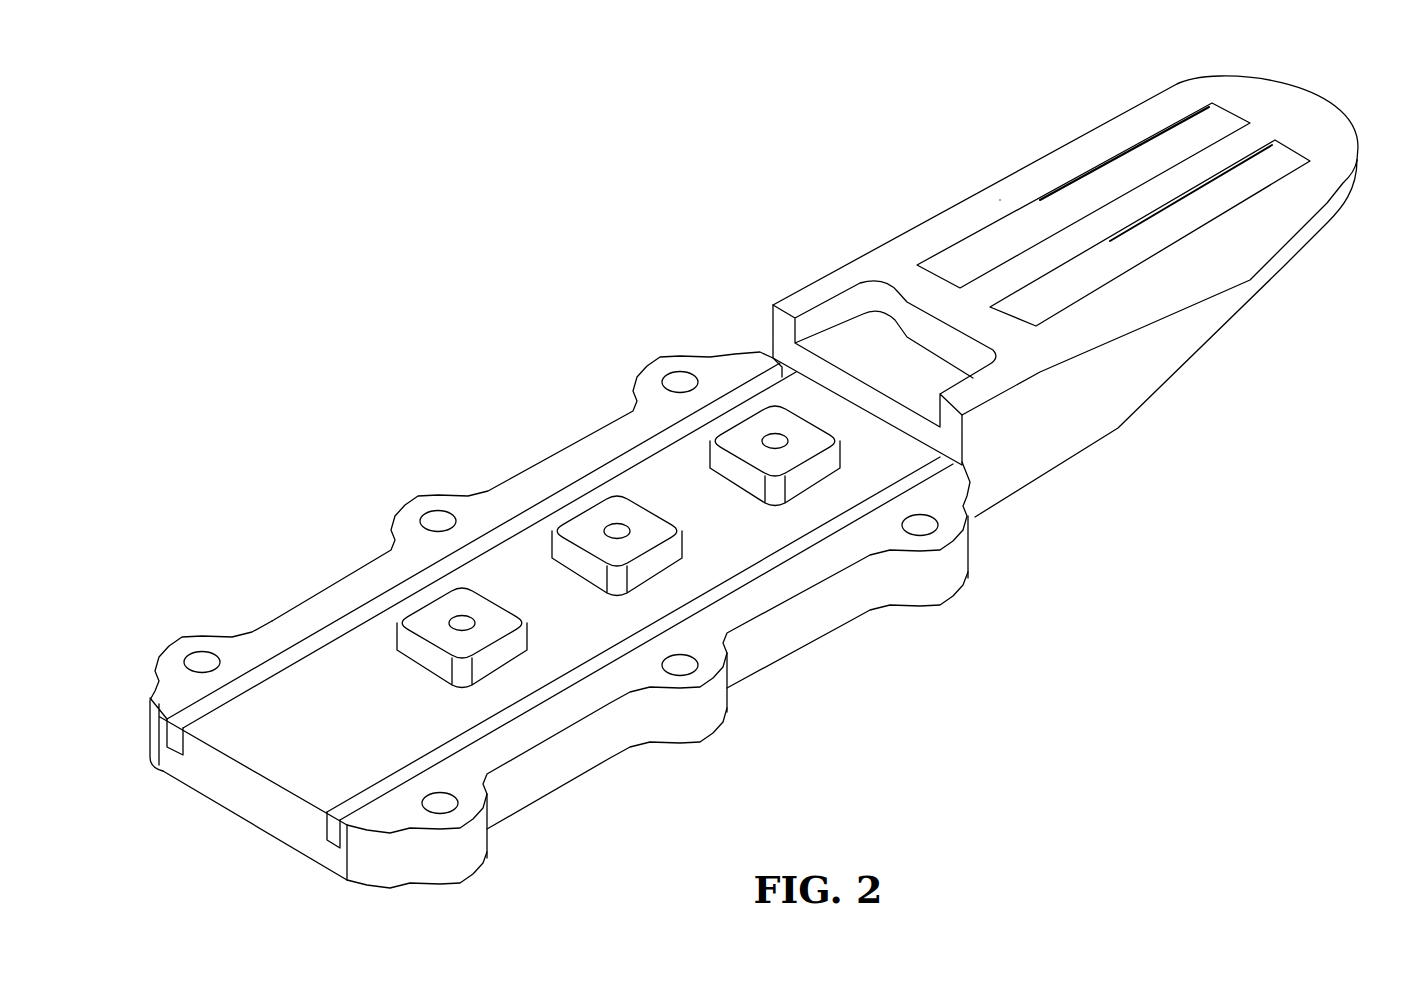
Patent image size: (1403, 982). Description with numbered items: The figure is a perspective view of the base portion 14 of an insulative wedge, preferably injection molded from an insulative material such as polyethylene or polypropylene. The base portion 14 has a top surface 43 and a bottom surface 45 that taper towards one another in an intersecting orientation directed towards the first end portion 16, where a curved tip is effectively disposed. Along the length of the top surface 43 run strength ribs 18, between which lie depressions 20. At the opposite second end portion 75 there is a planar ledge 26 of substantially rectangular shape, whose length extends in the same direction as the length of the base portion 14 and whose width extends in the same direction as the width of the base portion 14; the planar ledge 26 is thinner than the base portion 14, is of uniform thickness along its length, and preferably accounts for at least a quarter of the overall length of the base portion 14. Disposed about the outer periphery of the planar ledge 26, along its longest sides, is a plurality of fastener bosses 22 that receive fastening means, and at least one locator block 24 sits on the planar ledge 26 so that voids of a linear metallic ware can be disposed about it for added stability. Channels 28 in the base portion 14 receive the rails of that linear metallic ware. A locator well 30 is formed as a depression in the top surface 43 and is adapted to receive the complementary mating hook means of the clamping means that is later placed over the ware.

The base portion 14 is at (756, 486).
The first end portion 16 is at (1071, 292).
The strength ribs 18 is at (966, 215).
The depressions 20 is at (1048, 220).
The fastener bosses 22 is at (202, 653).
The locator block 24 is at (425, 620).
The planar ledge 26 is at (277, 748).
The channels 28 is at (177, 750).
The locator well 30 is at (888, 338).
The top surface 43 is at (972, 385).
The bottom surface 45 is at (1017, 497).
The second end portion 75 is at (300, 460).